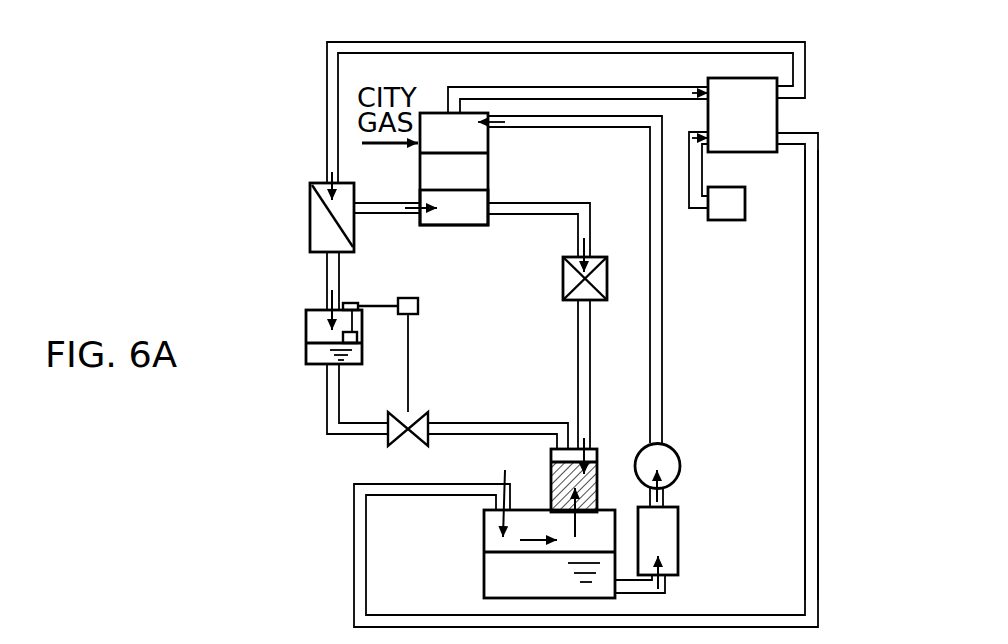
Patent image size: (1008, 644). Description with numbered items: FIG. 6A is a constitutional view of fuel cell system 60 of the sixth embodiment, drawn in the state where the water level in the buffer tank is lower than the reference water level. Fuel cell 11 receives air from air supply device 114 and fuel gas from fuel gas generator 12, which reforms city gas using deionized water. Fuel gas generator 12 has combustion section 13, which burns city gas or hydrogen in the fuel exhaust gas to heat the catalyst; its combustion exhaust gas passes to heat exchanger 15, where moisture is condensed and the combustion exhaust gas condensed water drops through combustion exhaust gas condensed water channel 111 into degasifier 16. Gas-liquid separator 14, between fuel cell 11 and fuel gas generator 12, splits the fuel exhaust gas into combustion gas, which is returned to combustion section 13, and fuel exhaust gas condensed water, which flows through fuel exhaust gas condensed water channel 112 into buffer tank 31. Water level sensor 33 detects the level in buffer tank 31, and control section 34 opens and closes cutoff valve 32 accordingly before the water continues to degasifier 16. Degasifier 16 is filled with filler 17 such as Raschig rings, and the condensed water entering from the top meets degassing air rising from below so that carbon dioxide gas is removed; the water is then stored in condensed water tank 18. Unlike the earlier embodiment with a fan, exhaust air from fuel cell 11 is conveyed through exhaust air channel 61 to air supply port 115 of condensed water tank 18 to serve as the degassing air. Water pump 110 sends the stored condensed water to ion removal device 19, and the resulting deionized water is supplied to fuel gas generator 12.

The fuel cell system 60 is at (303, 72).
The exhaust air channel 61 is at (818, 365).
The fuel cell 11 is at (768, 123).
The fuel gas generator 12 is at (433, 108).
The combustion section 13 is at (437, 220).
The gas-liquid separator 14 is at (315, 250).
The heat exchanger 15 is at (600, 258).
The degasifier 16 is at (598, 447).
The filler 17 is at (592, 488).
The condensed water tank 18 is at (497, 577).
The ion removal device 19 is at (670, 540).
The buffer tank 31 is at (308, 362).
The cutoff valve 32 is at (417, 412).
The water level sensor 33 is at (358, 337).
The control section 34 is at (420, 302).
The water pump 110 is at (682, 457).
The combustion exhaust gas condensed water channel 111 is at (590, 323).
The fuel exhaust gas condensed water channel 112 is at (340, 278).
The air supply device 114 is at (728, 213).
The air supply port 115 is at (586, 380).